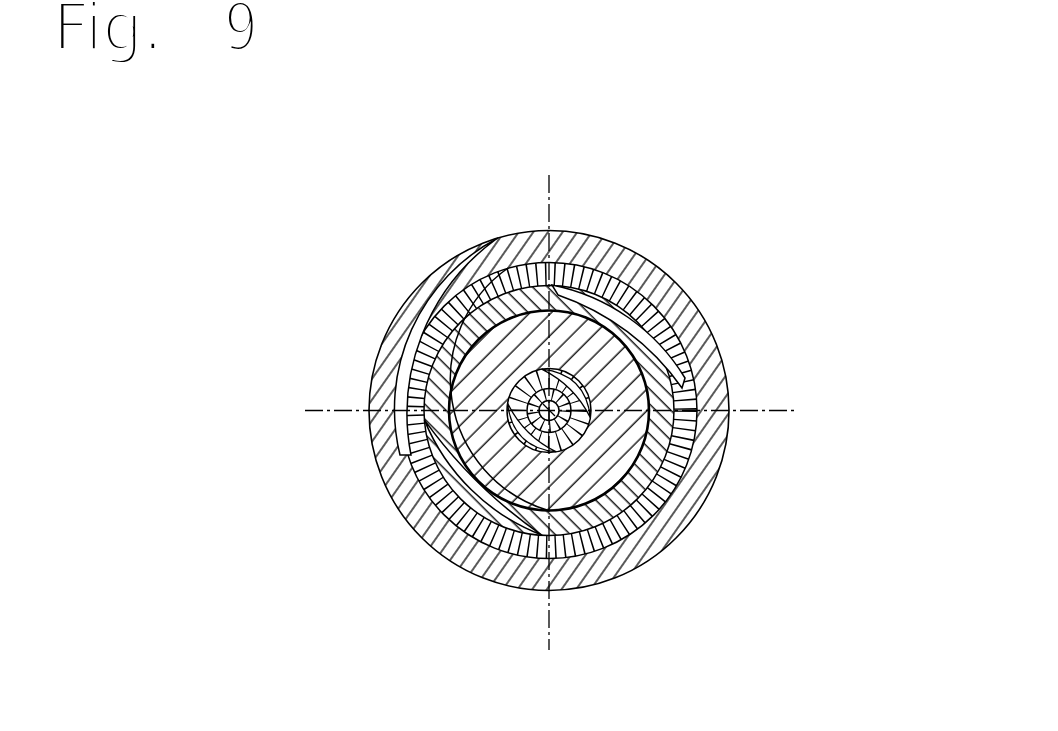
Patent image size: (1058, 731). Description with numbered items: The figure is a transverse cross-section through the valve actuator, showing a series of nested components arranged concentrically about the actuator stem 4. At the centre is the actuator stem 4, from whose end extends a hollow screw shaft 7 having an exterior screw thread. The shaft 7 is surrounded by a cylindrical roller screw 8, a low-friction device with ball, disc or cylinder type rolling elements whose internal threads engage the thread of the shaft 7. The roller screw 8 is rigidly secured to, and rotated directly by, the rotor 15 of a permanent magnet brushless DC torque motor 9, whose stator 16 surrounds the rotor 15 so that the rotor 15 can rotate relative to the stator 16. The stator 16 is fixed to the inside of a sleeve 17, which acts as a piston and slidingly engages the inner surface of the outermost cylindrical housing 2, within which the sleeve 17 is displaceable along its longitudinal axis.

The housing 2 is at (690, 305).
The actuator stem 4 is at (560, 418).
The hollow screw shaft 7 is at (518, 412).
The roller screw 8 is at (512, 390).
The motor 9 is at (641, 478).
The rotor 15 is at (518, 338).
The stator 16 is at (668, 390).
The sleeve 17 is at (690, 362).